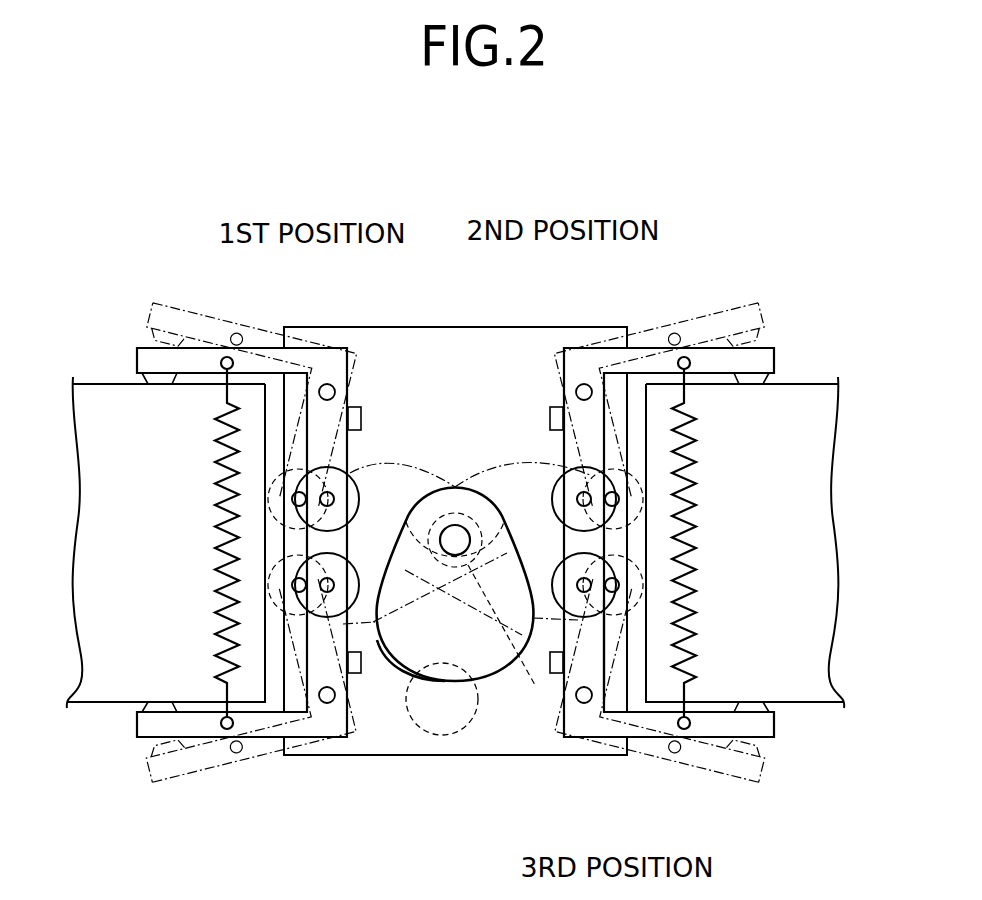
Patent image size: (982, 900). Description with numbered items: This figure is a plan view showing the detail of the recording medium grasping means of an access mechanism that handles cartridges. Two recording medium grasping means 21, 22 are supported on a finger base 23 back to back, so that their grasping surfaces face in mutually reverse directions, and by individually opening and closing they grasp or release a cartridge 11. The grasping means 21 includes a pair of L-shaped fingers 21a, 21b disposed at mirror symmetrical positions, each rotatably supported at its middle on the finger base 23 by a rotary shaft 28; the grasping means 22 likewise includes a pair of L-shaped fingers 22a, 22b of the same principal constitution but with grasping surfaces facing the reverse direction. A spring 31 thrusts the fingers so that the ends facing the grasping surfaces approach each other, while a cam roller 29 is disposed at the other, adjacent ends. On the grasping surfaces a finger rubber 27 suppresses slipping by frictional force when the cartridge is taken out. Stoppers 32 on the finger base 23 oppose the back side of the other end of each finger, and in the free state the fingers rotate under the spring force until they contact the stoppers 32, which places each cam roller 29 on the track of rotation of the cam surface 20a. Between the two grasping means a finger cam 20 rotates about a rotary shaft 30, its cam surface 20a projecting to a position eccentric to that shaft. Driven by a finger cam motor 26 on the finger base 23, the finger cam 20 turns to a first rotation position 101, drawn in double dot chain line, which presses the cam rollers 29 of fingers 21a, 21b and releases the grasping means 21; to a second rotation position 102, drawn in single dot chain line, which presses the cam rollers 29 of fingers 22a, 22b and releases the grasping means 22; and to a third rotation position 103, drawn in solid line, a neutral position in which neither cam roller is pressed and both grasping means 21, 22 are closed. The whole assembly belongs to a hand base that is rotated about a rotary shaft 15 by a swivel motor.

The cartridge 11 is at (97, 400).
The rotary shaft 15 is at (568, 668).
The finger cam 20 is at (494, 680).
The cam surface 20a is at (393, 680).
The recording medium grasping means 21 is at (135, 412).
The L-shaped finger 21a is at (183, 362).
The L-shaped finger 21b is at (203, 727).
The recording medium grasping means 22 is at (765, 418).
The L-shaped finger 22a is at (760, 356).
The L-shaped finger 22b is at (757, 733).
The finger base 23 is at (627, 327).
The finger cam motor 26 is at (447, 736).
The finger rubber 27 is at (160, 706).
The rotary shaft 28 is at (584, 384).
The cam roller 29 is at (357, 490).
The rotary shaft 30 is at (457, 533).
The spring 31 is at (218, 528).
The stopper 32 is at (550, 407).
The first rotation position 101 is at (405, 456).
The second rotation position 102 is at (489, 465).
The third rotation position 103 is at (507, 680).